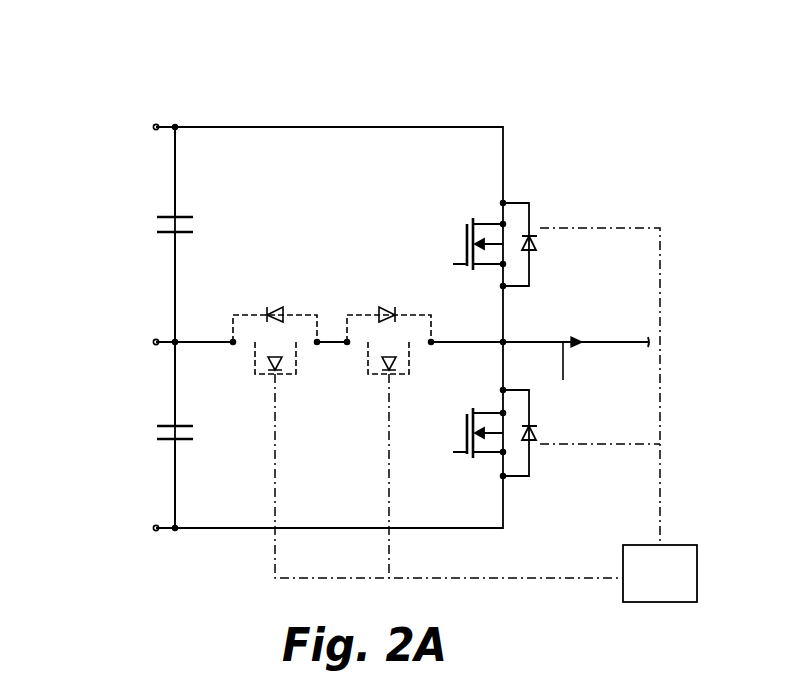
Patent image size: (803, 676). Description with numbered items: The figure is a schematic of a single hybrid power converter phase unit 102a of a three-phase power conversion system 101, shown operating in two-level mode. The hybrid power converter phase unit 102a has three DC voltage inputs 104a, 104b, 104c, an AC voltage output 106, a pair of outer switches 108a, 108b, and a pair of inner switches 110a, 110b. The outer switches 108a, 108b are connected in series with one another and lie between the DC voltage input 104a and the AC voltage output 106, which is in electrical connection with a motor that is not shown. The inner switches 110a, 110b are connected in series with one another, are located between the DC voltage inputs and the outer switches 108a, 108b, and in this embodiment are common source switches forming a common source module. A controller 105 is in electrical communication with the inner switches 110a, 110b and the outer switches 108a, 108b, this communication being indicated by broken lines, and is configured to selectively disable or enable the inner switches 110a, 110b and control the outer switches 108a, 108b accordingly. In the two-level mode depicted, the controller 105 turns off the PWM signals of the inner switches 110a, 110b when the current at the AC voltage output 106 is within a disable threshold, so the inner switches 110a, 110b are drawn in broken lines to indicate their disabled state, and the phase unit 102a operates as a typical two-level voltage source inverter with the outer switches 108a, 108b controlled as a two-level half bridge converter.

The three-phase power conversion system 101 is at (120, 64).
The hybrid power converter phase unit 102a is at (462, 93).
The DC voltage input 104a is at (156, 135).
The DC voltage input 104b is at (156, 350).
The DC voltage input 104c is at (156, 537).
The controller 105 is at (618, 415).
The AC voltage output 106 is at (540, 340).
The outer switch 108a is at (517, 198).
The outer switch 108b is at (511, 481).
The inner switch 110a is at (283, 301).
The inner switch 110b is at (402, 301).